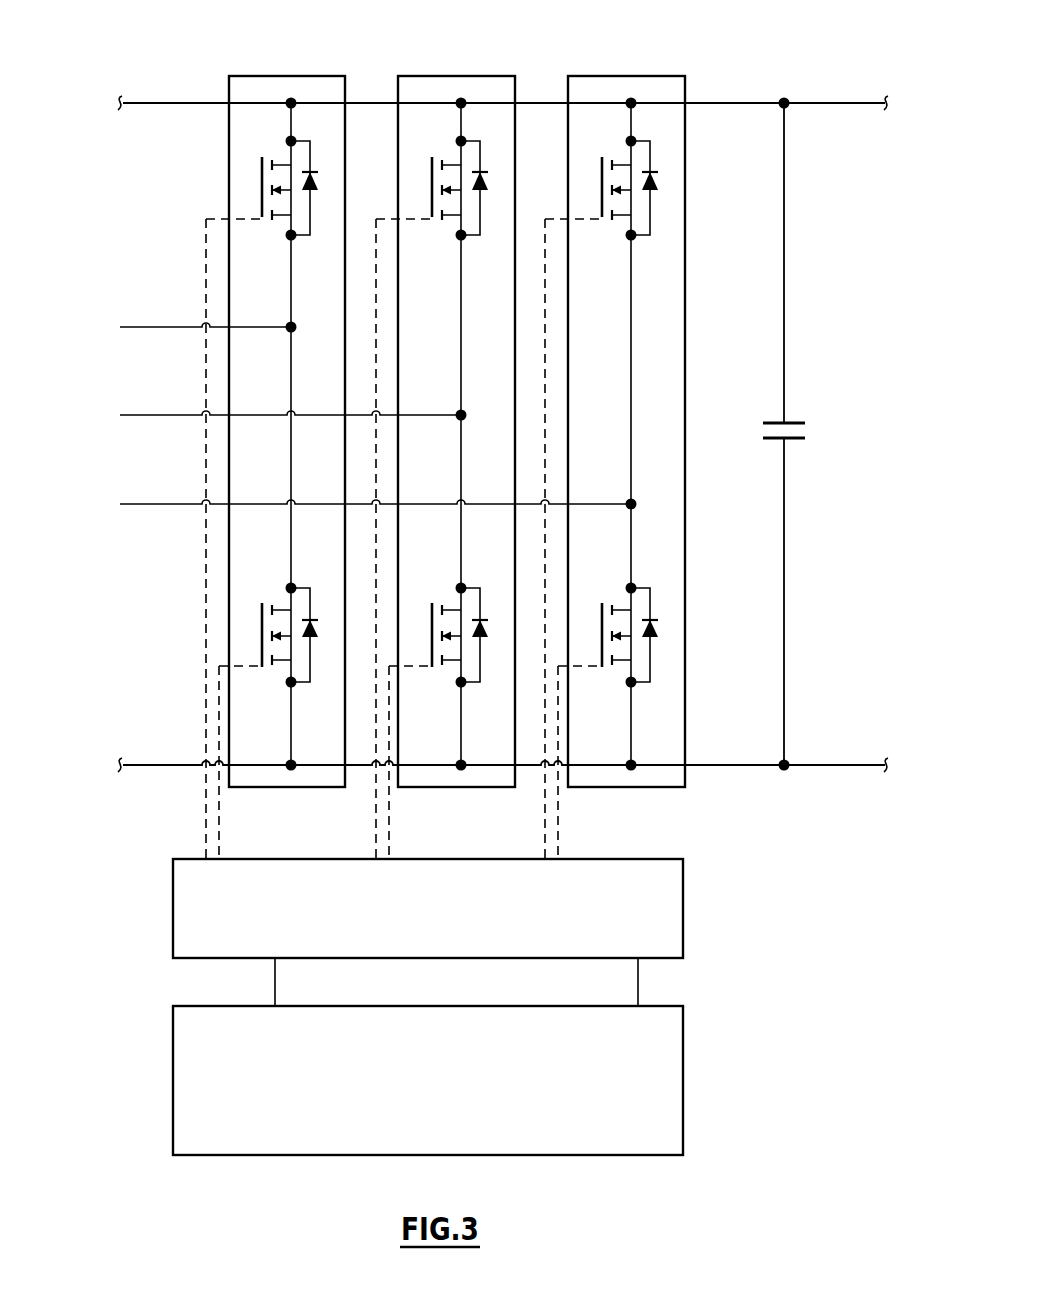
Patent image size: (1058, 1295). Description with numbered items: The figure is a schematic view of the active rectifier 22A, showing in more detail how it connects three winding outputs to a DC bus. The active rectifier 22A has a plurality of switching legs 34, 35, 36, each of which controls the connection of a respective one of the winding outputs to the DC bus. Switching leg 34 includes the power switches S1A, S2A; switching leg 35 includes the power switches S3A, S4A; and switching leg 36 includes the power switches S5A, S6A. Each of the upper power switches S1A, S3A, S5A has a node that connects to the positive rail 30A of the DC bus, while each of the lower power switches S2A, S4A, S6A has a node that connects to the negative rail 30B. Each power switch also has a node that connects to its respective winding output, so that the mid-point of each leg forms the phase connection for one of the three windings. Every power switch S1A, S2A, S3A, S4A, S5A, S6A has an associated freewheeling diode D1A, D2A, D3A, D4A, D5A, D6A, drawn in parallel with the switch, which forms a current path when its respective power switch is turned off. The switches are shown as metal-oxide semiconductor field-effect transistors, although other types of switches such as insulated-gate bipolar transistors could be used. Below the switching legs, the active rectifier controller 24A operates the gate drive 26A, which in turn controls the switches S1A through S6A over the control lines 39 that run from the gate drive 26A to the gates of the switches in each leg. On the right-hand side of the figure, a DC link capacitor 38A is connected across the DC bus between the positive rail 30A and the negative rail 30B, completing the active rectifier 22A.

The active rectifier 22A is at (768, 58).
The active rectifier controller 24A is at (173, 1085).
The gate drive 26A is at (173, 922).
The positive rail 30A is at (826, 105).
The negative rail 30B is at (826, 768).
The switching leg 34 is at (302, 62).
The switching leg 35 is at (465, 62).
The switching leg 36 is at (628, 62).
The DC link capacitor 38A is at (792, 422).
The control lines 39 is at (219, 816).
The power switch S1A is at (252, 184).
The power switch S2A is at (250, 608).
The power switch S3A is at (422, 184).
The power switch S4A is at (420, 608).
The power switch S5A is at (592, 184).
The power switch S6A is at (590, 608).
The freewheeling diode D1A is at (322, 208).
The freewheeling diode D2A is at (322, 656).
The freewheeling diode D3A is at (492, 208).
The freewheeling diode D4A is at (492, 656).
The freewheeling diode D5A is at (662, 208).
The freewheeling diode D6A is at (662, 656).